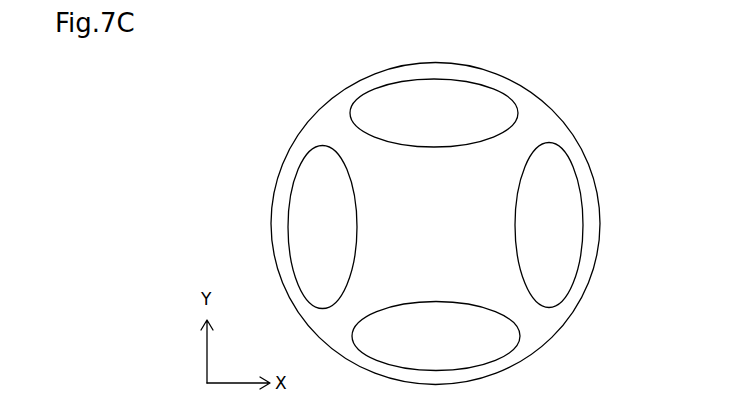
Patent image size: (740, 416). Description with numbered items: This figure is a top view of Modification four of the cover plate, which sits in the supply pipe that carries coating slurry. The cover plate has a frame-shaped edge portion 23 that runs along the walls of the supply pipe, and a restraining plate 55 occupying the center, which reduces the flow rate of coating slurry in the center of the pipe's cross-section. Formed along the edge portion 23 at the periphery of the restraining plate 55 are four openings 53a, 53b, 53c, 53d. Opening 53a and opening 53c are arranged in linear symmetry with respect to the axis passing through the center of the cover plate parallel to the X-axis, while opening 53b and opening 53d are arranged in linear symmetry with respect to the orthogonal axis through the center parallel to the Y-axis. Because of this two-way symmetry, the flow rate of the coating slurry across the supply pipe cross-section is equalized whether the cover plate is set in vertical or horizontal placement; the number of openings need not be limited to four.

The edge portion 23 is at (520, 357).
The opening 53a is at (495, 111).
The opening 53b is at (553, 213).
The opening 53c is at (492, 343).
The opening 53d is at (312, 205).
The restraining plate 55 is at (463, 195).